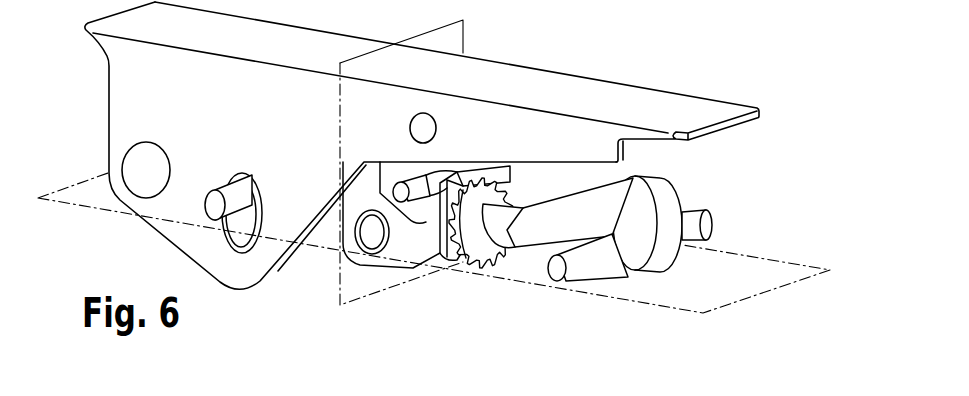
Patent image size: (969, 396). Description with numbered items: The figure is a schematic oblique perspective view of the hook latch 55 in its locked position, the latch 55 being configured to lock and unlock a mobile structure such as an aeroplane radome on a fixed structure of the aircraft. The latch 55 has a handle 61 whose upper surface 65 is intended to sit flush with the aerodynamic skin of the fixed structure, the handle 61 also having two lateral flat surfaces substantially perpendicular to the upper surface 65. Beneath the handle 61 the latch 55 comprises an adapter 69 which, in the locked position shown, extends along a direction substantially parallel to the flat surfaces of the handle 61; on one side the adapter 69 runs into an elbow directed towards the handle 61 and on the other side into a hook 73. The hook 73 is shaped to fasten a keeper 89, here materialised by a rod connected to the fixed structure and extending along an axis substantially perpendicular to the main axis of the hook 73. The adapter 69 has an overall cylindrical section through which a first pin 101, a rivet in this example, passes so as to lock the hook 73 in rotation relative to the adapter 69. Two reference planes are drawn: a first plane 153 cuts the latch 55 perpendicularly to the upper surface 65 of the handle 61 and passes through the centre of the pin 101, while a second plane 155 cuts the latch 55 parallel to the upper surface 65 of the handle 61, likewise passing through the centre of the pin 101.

The latch 55 is at (396, 145).
The handle 61 is at (140, 110).
The upper surface 65 is at (668, 107).
The adapter 69 is at (290, 282).
The hook 73 is at (676, 183).
The keeper 89 is at (722, 215).
The first pin 101 is at (372, 232).
The first plane 153 is at (358, 298).
The second plane 155 is at (767, 292).